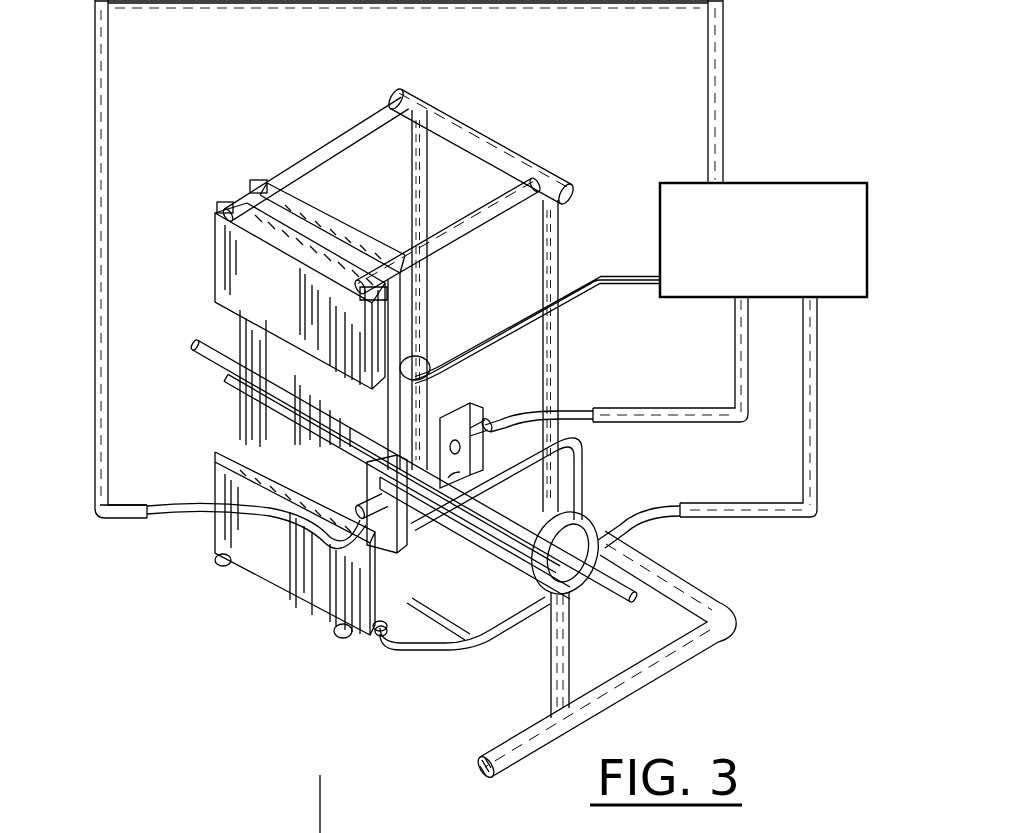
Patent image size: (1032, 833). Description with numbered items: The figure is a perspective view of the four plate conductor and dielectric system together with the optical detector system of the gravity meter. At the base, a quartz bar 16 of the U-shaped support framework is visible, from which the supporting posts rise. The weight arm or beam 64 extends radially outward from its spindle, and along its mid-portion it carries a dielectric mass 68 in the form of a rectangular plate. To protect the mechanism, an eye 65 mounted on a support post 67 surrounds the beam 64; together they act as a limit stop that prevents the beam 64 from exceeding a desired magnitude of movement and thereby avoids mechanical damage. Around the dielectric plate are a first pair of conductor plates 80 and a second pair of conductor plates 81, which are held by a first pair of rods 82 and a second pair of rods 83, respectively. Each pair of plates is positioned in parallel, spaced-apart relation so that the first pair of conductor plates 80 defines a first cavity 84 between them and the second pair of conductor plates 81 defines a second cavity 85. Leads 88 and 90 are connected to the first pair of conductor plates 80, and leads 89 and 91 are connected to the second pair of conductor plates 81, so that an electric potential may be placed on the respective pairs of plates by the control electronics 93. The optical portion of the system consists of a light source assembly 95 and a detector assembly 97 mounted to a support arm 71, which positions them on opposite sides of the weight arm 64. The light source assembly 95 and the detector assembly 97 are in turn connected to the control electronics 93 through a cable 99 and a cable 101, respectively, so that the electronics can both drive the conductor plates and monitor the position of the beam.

The quartz bar 16 is at (684, 668).
The weight arm 64 is at (213, 358).
The eye 65 is at (590, 512).
The support post 67 is at (569, 643).
The dielectric mass 68 is at (230, 405).
The support arm 71 is at (582, 448).
The first pair of conductor plates 80 is at (445, 558).
The second pair of conductor plates 81 is at (213, 238).
The first pair of rods 82 is at (227, 570).
The second pair of rods 83 is at (375, 115).
The first cavity 84 is at (400, 630).
The second cavity 85 is at (233, 193).
The lead 88 is at (386, 636).
The lead 89 is at (413, 378).
The lead 90 is at (441, 616).
The lead 91 is at (443, 360).
The control electronics 93 is at (746, 183).
The light source assembly 95 is at (352, 481).
The detector assembly 97 is at (455, 410).
The cable 99 is at (117, 520).
The cable 101 is at (665, 407).